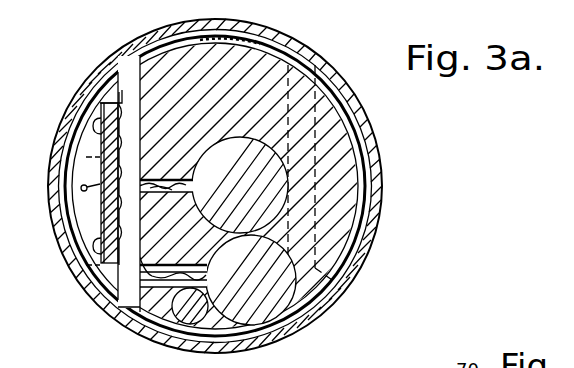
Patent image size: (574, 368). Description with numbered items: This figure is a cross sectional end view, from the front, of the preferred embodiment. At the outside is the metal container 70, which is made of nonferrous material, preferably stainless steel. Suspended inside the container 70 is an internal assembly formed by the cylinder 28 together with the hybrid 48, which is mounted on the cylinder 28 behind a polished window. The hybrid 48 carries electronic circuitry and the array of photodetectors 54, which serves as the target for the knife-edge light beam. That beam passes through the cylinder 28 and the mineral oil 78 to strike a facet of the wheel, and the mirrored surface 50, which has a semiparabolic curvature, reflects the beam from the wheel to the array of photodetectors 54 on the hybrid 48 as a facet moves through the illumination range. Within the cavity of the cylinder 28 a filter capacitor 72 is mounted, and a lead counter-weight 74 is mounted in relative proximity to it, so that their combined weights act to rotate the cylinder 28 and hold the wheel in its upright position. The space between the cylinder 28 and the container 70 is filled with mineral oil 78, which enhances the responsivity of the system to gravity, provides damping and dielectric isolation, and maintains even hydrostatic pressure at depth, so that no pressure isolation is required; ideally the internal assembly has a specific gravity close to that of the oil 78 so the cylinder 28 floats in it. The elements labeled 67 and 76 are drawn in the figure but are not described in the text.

The cylinder 28 is at (150, 63).
The hybrid 48 is at (110, 242).
The mirrored surface 50 is at (335, 282).
The array of photodetectors 54 is at (101, 89).
The wire channel 67 is at (173, 180).
The container 70 is at (56, 160).
The filter capacitor 72 is at (265, 316).
The lead counter-weight 74 is at (165, 315).
The lead wire 76 is at (121, 268).
The mineral oil 78 is at (66, 204).